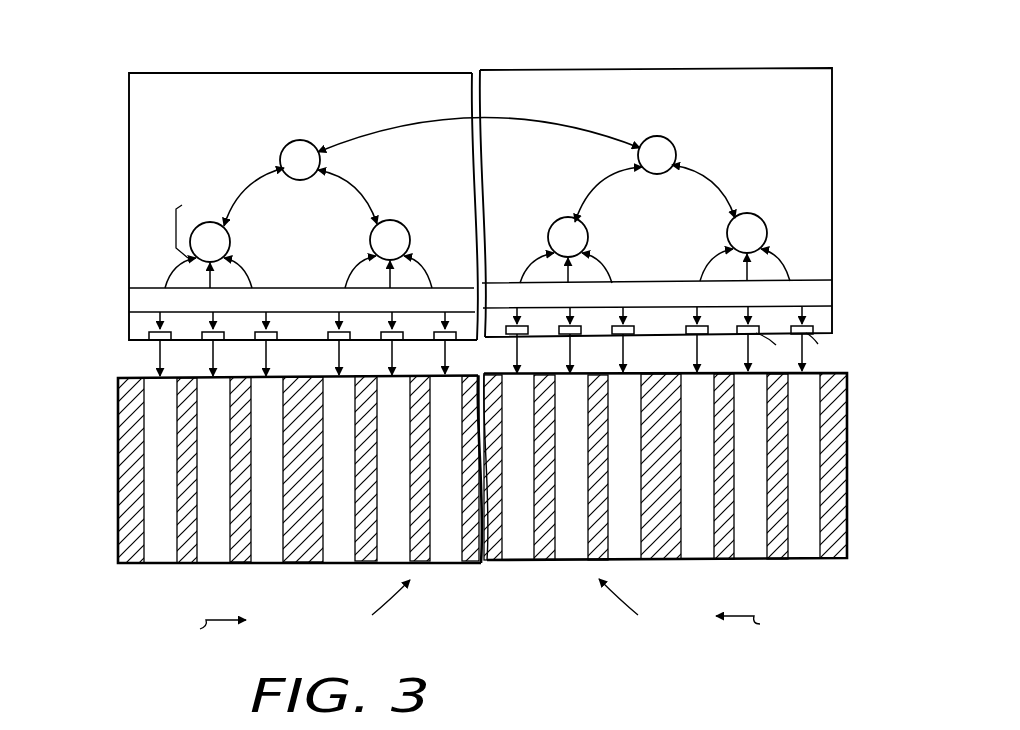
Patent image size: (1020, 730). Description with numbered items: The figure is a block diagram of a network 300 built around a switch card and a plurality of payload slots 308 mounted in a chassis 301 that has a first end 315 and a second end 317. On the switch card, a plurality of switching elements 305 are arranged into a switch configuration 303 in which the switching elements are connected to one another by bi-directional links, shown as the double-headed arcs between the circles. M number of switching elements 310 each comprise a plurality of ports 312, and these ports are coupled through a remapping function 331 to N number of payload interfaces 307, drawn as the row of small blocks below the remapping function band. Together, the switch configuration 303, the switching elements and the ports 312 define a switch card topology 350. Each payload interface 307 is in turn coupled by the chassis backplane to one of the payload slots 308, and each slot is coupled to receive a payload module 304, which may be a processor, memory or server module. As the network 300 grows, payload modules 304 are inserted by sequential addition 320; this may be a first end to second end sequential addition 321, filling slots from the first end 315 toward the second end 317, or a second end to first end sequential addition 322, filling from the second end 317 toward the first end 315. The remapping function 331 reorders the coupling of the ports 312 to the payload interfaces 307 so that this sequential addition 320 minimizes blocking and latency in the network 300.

The network 300 is at (505, 653).
The chassis 301 is at (553, 57).
The switch configuration 303 is at (393, 205).
The payload module 304 is at (285, 582).
The switching elements 305 is at (290, 144).
The payload interfaces 307 is at (108, 318).
The payload slots 308 is at (456, 486).
The M number of switching elements 310 is at (162, 231).
The ports 312 is at (165, 278).
The first end 315 is at (117, 420).
The second end 317 is at (848, 410).
The sequential addition 320 is at (501, 606).
The first end to second end sequential addition 321 is at (203, 637).
The second end to first end sequential addition 322 is at (756, 632).
The remapping function 331 is at (291, 287).
The switch card topology 350 is at (342, 127).